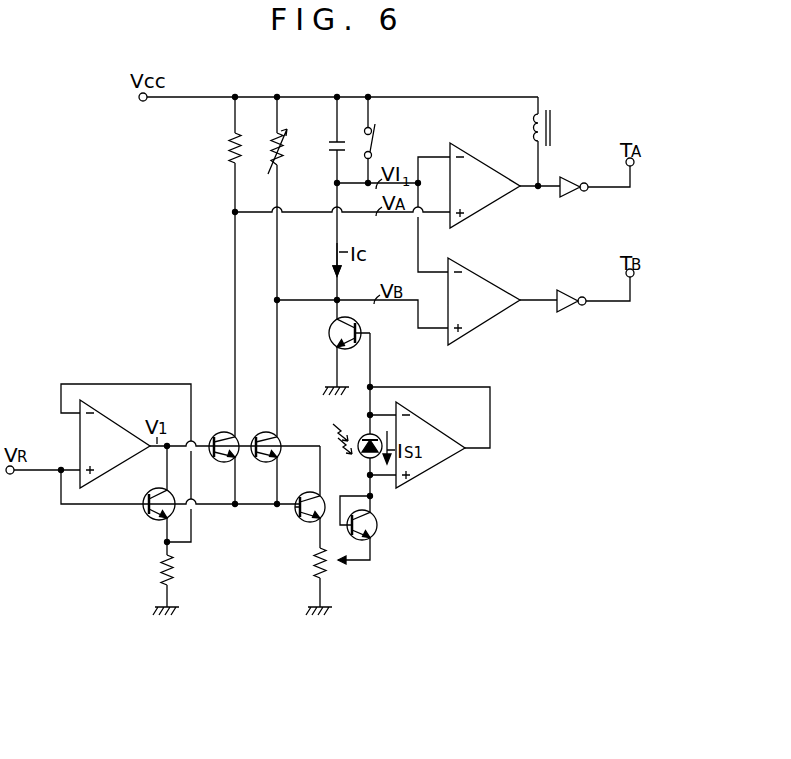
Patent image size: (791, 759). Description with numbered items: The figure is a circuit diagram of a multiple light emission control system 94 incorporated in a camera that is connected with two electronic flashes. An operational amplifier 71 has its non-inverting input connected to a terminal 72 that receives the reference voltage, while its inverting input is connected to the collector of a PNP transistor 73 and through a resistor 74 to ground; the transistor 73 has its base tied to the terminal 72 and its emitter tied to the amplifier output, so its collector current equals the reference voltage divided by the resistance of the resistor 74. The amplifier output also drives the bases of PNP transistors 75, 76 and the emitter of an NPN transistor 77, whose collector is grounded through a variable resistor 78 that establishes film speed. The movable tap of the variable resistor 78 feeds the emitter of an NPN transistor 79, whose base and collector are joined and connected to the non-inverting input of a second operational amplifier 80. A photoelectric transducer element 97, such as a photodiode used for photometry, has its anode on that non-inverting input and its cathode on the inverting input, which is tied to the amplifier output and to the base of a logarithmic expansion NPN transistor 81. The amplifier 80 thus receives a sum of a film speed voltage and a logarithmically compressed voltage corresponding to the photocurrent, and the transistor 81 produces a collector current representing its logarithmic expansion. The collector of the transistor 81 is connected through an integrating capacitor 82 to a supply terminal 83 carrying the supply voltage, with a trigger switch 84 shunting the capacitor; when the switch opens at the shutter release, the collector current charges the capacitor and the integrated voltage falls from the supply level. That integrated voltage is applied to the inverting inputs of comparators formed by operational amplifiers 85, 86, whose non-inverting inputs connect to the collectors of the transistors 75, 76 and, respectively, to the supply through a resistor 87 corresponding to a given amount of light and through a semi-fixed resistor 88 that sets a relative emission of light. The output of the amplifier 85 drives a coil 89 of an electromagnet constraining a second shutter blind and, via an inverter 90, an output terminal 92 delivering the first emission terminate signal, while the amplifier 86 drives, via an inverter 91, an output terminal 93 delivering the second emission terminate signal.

The operational amplifier 71 is at (115, 424).
The terminal 72 is at (12, 474).
The PNP transistor 73 is at (153, 493).
The resistor 74 is at (171, 575).
The PNP transistor 75 is at (215, 434).
The PNP transistor 76 is at (263, 434).
The NPN transistor 77 is at (308, 497).
The variable resistor 78 is at (316, 572).
The NPN transistor 79 is at (376, 523).
The operational amplifier 80 is at (425, 435).
The NPN transistor 81 is at (330, 333).
The integrating capacitor 82 is at (330, 146).
The terminal 83 is at (146, 101).
The trigger switch 84 is at (371, 141).
The operational amplifier 85 is at (479, 174).
The operational amplifier 86 is at (474, 282).
The resistor 87 is at (228, 151).
The semi-fixed resistor 88 is at (283, 157).
The coil 89 is at (551, 123).
The inverter 90 is at (567, 181).
The inverter 91 is at (565, 296).
The output terminal 92 is at (633, 165).
The output terminal 93 is at (633, 276).
The multiple light emission control system 94 is at (406, 93).
The photoelectric transducer element 97 is at (366, 432).